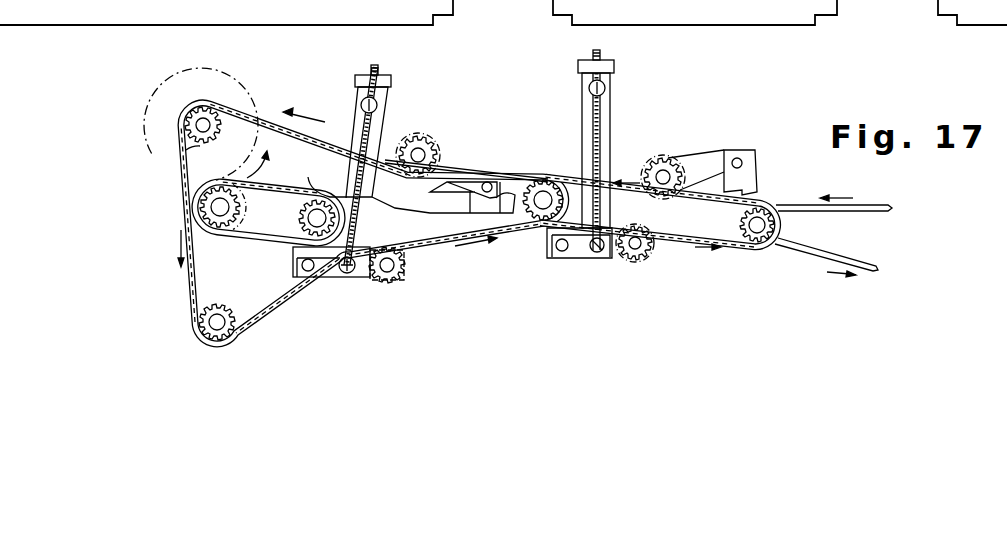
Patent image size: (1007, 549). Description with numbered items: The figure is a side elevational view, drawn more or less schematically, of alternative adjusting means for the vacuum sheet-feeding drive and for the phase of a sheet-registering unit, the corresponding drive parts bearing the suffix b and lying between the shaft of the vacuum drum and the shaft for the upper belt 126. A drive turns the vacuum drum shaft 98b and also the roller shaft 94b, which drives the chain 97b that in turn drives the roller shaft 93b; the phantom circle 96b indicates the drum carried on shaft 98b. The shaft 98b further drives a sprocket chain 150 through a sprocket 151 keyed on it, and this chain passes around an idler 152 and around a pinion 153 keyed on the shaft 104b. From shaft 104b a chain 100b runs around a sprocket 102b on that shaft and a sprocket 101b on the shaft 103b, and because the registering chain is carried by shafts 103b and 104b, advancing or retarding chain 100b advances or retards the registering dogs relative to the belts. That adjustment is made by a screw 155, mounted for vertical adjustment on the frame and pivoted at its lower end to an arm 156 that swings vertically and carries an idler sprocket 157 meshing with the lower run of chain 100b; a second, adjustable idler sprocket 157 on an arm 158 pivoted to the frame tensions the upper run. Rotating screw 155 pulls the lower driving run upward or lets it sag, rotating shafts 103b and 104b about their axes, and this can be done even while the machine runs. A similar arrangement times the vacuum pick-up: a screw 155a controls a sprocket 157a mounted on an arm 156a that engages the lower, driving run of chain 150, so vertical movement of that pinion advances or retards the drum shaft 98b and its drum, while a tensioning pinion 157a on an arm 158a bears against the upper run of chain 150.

The drive wheel (phantom) 96b is at (223, 82).
The vacuum drum shaft 98b is at (197, 126).
The sprocket 151 is at (197, 142).
The sprocket chain 150 is at (192, 272).
The roller shaft 94b is at (222, 205).
The roller shaft 93b is at (317, 217).
The chain 97b is at (275, 237).
The idler 152 is at (245, 327).
The screw 155a is at (368, 122).
The arm 156a is at (325, 268).
The sprocket 157a is at (427, 143).
The arm 158a is at (457, 165).
The shaft 104b is at (543, 195).
The sprocket 102b is at (508, 237).
The screw 155 is at (600, 118).
The pinion 153 is at (545, 235).
The arm 156 is at (578, 250).
The idler sprocket 157 is at (668, 163).
The arm 158 is at (728, 160).
The shaft 103b is at (758, 218).
The sprocket 101b is at (768, 210).
The chain 100b is at (680, 233).
The upper belt 126 is at (858, 207).